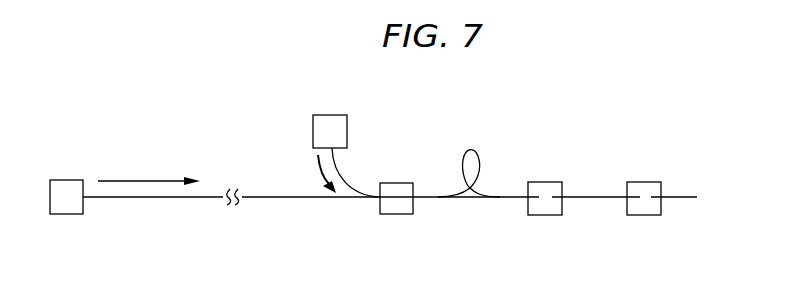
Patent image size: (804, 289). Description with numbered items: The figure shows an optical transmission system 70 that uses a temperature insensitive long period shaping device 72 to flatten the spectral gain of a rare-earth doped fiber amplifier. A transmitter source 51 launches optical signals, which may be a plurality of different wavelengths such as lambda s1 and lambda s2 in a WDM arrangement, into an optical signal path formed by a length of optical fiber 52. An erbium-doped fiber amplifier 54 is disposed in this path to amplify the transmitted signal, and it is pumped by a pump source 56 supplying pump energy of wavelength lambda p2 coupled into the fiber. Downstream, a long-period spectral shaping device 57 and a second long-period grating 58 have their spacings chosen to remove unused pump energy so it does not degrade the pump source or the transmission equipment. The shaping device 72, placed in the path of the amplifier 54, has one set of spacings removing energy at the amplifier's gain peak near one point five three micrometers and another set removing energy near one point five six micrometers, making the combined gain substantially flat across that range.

The transmitter source 51 is at (65, 180).
The optical fiber 52 is at (127, 197).
The erbium-doped fiber amplifier 54 is at (470, 150).
The pump source 56 is at (333, 115).
The long-period spectral shaping device 57 is at (397, 214).
The second long-period grating 58 is at (648, 215).
The optical transmission system 70 is at (606, 140).
The temperature insensitive long period shaping device 72 is at (545, 215).